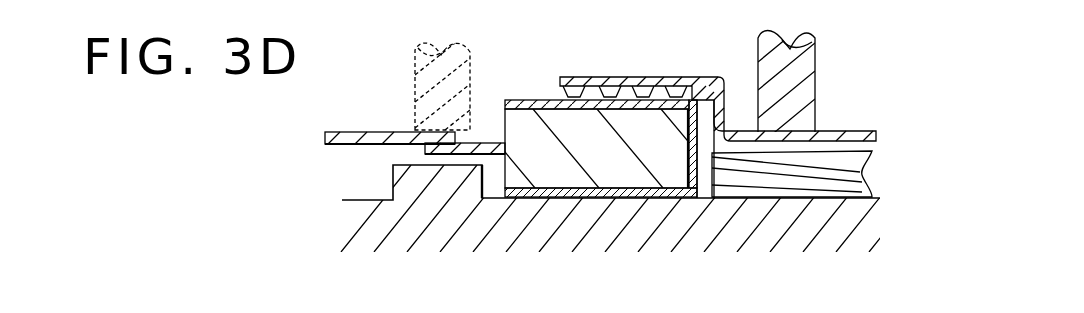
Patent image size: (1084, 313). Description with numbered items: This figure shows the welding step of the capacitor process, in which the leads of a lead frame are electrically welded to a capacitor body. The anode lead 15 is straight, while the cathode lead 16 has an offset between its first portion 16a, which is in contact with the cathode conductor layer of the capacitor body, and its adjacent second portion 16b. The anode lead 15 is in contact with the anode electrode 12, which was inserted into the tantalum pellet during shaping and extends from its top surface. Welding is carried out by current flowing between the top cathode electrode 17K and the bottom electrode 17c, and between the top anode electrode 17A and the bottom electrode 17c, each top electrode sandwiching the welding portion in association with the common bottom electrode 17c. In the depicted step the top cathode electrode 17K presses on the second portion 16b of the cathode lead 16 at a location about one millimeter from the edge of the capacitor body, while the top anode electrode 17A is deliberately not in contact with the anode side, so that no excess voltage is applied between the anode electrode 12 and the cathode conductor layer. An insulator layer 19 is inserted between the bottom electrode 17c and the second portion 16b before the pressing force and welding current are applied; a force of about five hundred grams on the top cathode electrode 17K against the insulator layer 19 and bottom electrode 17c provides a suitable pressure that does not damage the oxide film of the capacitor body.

The anode electrode 12 is at (482, 141).
The anode lead 15 is at (325, 137).
The cathode lead 16 is at (769, 107).
The first portion of the cathode lead 16a is at (680, 77).
The second portion of the cathode lead 16b is at (845, 131).
The top anode electrode 17A is at (412, 76).
The top cathode electrode 17K is at (818, 52).
The bottom electrode 17c is at (753, 212).
The insulator layer 19 is at (860, 172).